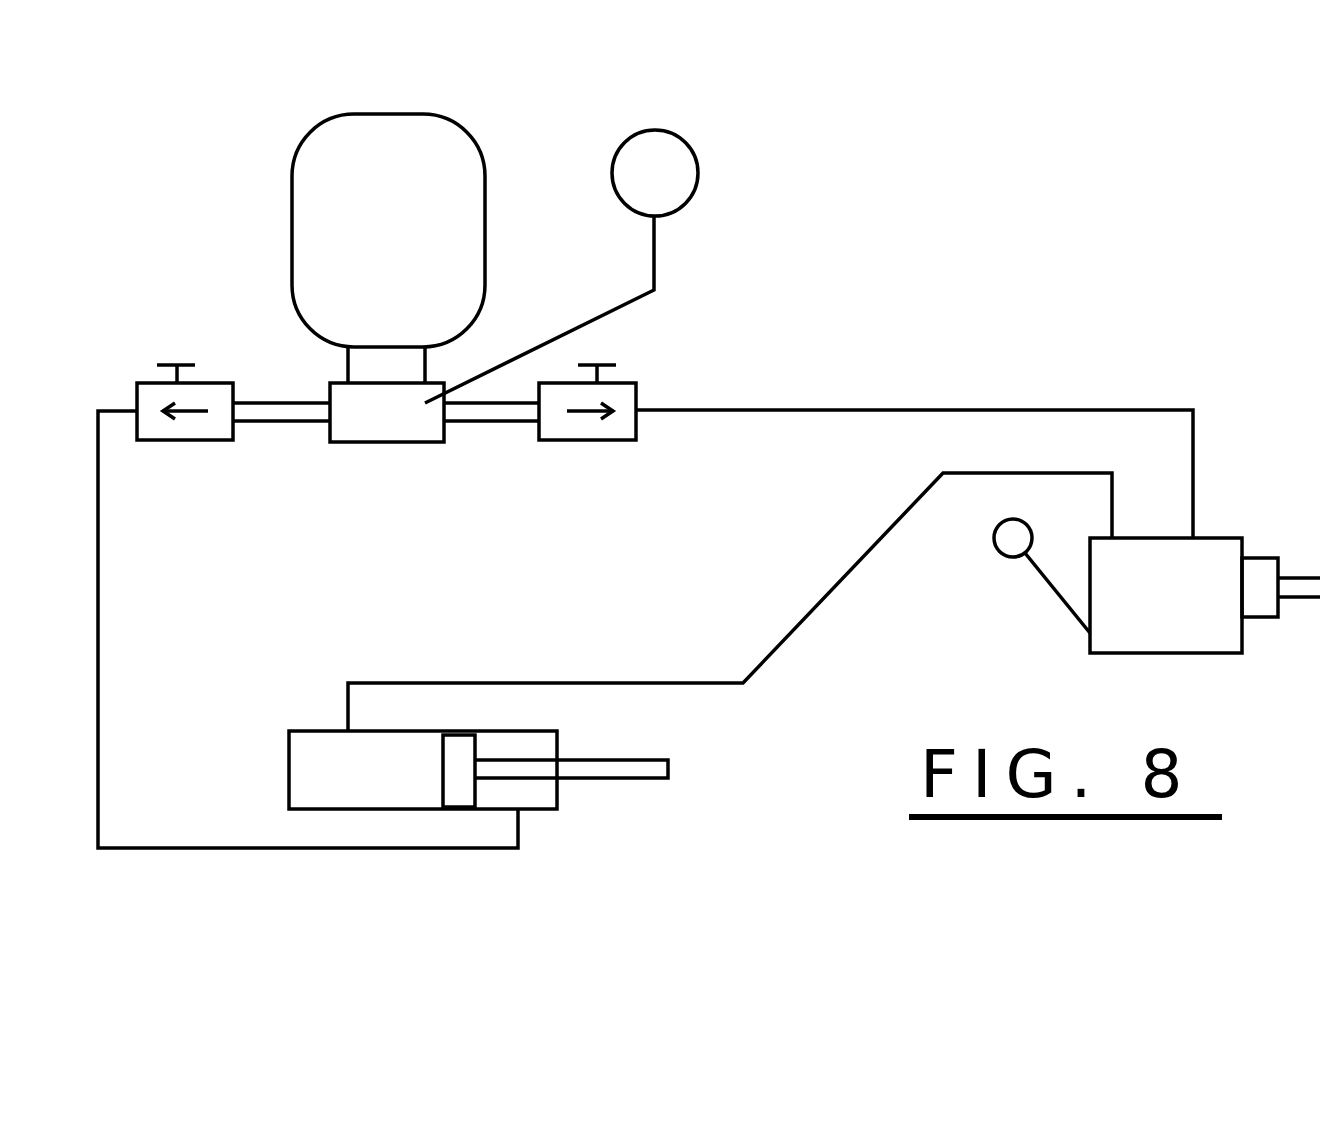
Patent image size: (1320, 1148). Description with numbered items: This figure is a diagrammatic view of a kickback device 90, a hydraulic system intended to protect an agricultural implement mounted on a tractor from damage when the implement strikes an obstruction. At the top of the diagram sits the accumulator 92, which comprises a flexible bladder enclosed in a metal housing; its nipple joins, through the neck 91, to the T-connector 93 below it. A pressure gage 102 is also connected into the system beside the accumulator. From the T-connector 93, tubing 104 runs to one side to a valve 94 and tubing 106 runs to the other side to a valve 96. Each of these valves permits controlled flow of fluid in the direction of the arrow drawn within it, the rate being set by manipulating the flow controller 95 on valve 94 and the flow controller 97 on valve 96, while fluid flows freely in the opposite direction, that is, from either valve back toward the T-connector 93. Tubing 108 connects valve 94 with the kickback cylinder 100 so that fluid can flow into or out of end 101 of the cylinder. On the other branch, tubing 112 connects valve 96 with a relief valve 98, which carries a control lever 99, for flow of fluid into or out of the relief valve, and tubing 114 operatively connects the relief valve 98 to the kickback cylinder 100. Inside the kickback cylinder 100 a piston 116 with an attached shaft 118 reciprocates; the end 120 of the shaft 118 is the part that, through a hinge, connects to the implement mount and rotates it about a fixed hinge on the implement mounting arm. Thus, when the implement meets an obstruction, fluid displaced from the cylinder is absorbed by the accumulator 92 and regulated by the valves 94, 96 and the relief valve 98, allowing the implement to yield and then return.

The kickback device 90 is at (759, 328).
The neck 91 is at (347, 350).
The accumulator 92 is at (437, 145).
The T-connector 93 is at (357, 442).
The valve 94 is at (212, 398).
The flow controller 95 is at (160, 363).
The valve 96 is at (637, 393).
The flow controller 97 is at (596, 362).
The relief valve 98 is at (1172, 565).
The control lever 99 is at (1038, 582).
The kickback cylinder 100 is at (370, 742).
The end 101 is at (558, 792).
The pressure gage 102 is at (663, 163).
The tubing 104 is at (298, 422).
The tubing 106 is at (532, 457).
The tubing 108 is at (98, 548).
The tubing 112 is at (818, 408).
The tubing 114 is at (553, 683).
The piston 116 is at (458, 768).
The shaft 118 is at (575, 768).
The end of shaft 120 is at (668, 770).